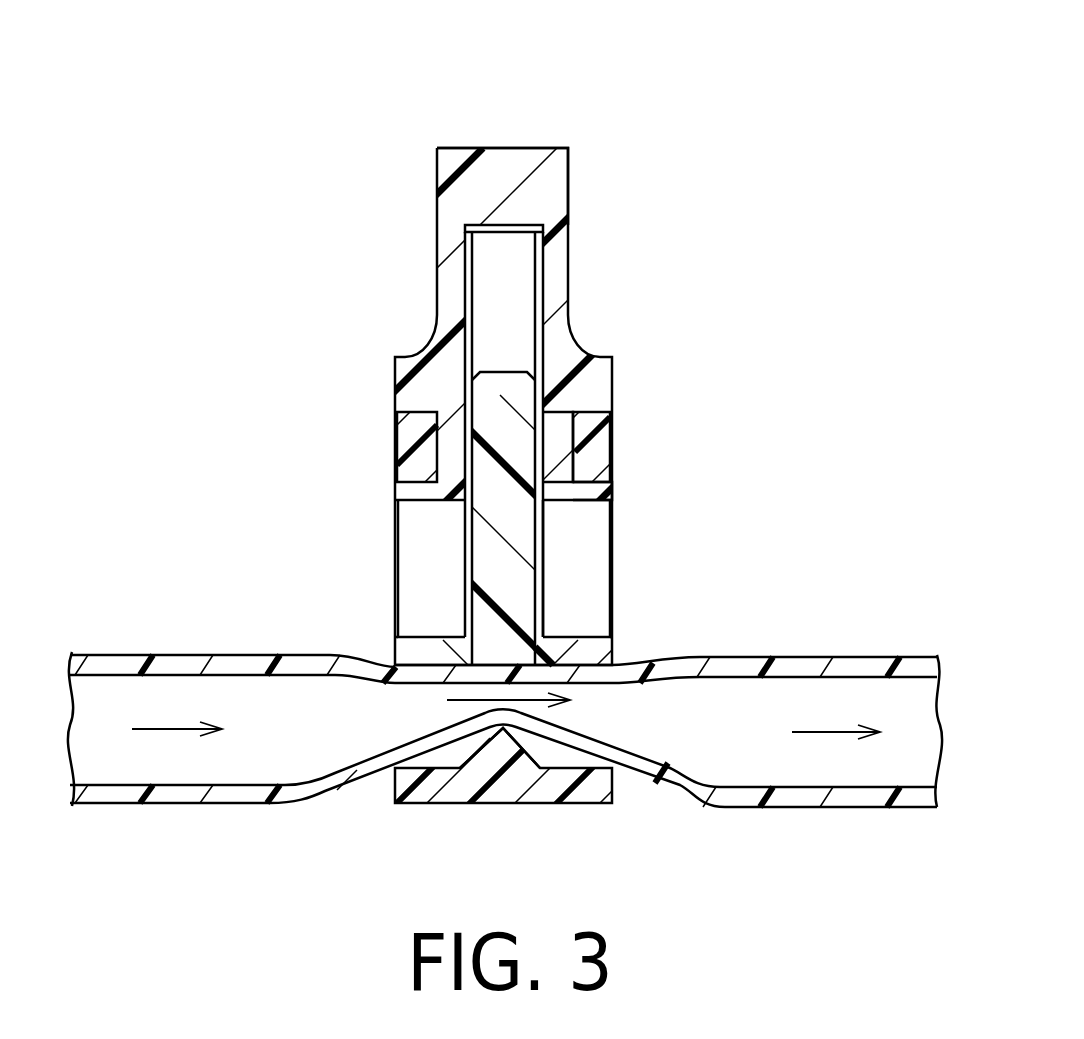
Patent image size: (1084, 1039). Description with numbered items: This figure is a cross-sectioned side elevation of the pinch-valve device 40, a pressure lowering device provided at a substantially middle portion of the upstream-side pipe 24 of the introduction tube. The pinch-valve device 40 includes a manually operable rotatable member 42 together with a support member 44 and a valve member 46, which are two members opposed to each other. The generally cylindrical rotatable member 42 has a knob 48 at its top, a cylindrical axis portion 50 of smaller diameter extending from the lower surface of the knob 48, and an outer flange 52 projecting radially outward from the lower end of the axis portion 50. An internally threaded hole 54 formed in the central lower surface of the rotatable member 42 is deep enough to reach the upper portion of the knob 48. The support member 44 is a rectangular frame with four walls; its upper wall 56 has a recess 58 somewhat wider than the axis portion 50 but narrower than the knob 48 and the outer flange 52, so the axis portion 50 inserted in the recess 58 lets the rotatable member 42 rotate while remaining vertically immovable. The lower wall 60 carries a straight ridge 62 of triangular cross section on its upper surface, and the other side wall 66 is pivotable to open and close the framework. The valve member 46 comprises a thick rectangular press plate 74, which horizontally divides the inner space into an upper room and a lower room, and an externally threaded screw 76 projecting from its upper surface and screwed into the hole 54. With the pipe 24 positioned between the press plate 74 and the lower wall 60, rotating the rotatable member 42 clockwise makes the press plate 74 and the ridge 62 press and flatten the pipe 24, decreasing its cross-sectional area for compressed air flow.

The upstream-side pipe 24 is at (842, 800).
The pinch-valve device 40 is at (476, 366).
The rotatable member 42 is at (476, 366).
The support member 44 is at (528, 582).
The valve member 46 is at (552, 577).
The knob 48 is at (447, 217).
The axis portion 50 is at (560, 432).
The outer flange 52 is at (588, 490).
The internally threaded hole 54 is at (537, 298).
The upper wall 56 is at (602, 448).
The recess 58 is at (437, 442).
The lower wall 60 is at (531, 794).
The straight ridge 62 is at (505, 745).
The other side wall 66 is at (501, 582).
The press plate 74 is at (424, 650).
The screw 76 is at (512, 412).